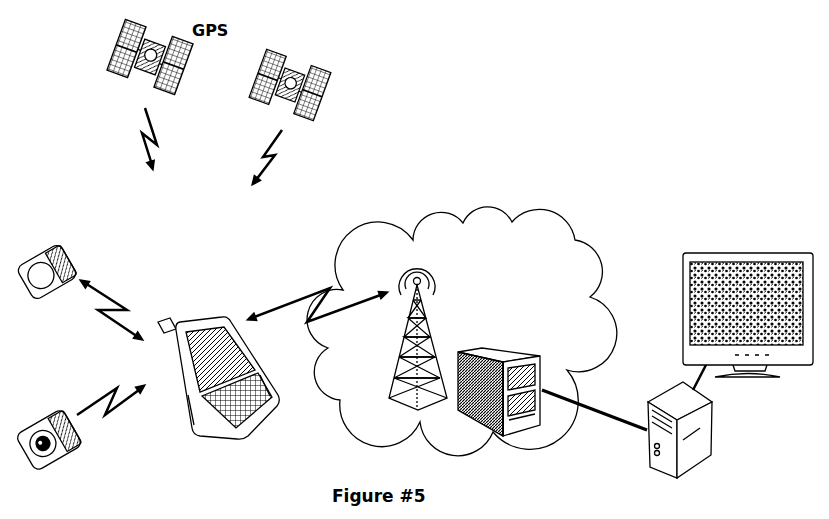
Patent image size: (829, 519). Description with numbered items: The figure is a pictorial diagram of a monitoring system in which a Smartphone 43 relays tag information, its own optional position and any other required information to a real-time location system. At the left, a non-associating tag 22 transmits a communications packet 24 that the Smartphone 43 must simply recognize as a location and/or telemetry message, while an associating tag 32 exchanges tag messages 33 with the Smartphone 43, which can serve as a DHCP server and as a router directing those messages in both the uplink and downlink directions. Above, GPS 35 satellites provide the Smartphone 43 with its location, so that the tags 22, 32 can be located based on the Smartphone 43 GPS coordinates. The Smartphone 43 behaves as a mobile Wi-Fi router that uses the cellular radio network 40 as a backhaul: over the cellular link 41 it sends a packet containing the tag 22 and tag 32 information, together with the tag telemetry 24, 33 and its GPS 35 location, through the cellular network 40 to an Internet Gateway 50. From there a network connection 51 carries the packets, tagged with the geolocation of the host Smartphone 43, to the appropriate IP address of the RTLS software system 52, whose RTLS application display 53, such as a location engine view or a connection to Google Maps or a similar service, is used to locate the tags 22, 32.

The non-associating tag 22 is at (70, 452).
The communications packet 24 is at (130, 398).
The associating tag 32 is at (58, 293).
The tag messages 33 is at (103, 292).
The GPS 35 is at (176, 72).
The cellular radio network 40 is at (462, 331).
The cellular link 41 is at (303, 293).
The Smartphone 43 is at (277, 413).
The Internet Gateway 50 is at (495, 430).
The network connection 51 is at (607, 417).
The RTLS software system 52 is at (683, 467).
The RTLS application display 53 is at (727, 270).